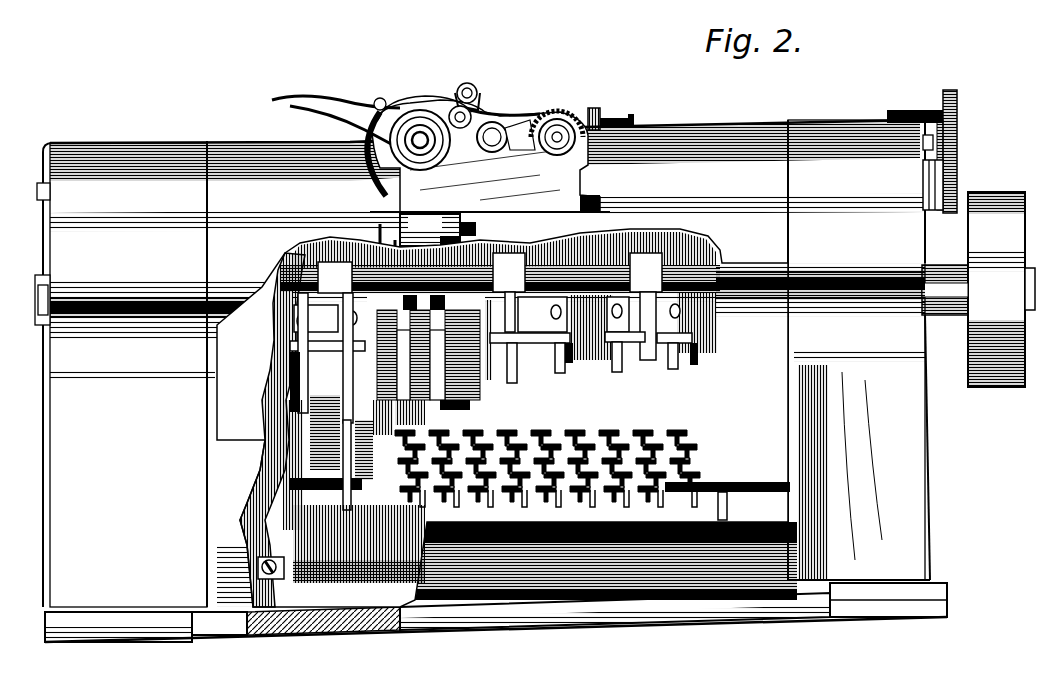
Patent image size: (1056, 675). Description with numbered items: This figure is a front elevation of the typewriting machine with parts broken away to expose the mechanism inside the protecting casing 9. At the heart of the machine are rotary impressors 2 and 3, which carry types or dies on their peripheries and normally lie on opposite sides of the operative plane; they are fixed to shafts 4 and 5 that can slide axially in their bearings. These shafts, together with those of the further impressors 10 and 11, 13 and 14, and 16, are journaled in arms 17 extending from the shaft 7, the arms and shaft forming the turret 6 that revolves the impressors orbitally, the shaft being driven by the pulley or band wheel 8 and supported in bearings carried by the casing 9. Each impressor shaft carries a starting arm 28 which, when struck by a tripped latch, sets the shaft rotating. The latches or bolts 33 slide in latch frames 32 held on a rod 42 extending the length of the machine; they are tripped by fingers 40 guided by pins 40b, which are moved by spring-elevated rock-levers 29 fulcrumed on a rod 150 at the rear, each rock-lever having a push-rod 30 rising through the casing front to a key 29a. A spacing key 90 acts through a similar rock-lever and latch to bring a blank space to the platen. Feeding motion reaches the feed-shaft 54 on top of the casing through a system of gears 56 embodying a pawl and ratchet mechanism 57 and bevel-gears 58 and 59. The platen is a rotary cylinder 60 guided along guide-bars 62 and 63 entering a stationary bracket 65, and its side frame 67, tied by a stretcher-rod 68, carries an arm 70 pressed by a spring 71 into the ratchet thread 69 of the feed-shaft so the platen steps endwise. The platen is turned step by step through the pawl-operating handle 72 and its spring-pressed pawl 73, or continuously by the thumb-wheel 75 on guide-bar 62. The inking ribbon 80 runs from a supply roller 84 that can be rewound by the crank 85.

The impressor 2 is at (405, 304).
The impressor 3 is at (445, 303).
The shaft 4 is at (276, 303).
The shaft 5 is at (712, 298).
The turret 6 is at (468, 378).
The shaft 7 is at (1031, 276).
The pulley or band wheel 8 is at (978, 314).
The protecting casing 9 is at (58, 412).
The impressor 10 is at (415, 252).
The impressor 11 is at (443, 252).
The impressor 13 is at (428, 388).
The impressor 14 is at (452, 388).
The impressor 16 is at (368, 460).
The arms 17 is at (480, 252).
The starting arm 28 is at (290, 408).
The rock-lever 29 is at (336, 584).
The key 29a is at (586, 440).
The push-rod 30 is at (486, 509).
The latch frame 32 is at (290, 368).
The latch or bolt 33 is at (306, 324).
The finger 40 is at (300, 432).
The pins 40b is at (672, 344).
The rod 42 is at (568, 275).
The feed-shaft 54 is at (720, 124).
The system of gears 56 is at (957, 115).
The pawl and ratchet mechanism 57 is at (934, 212).
The bevel-gear 58 is at (596, 108).
The bevel-gear 59 is at (553, 110).
The rotary cylinder platen 60 is at (428, 100).
The guide-bar 62 is at (488, 150).
The guide-bar 63 is at (520, 150).
The stationary bracket 65 is at (583, 195).
The side frame 67 is at (468, 84).
The stretcher-rod 68 is at (478, 94).
The ratchet thread or feed-screw 69 is at (553, 150).
The arm 70 is at (515, 113).
The spring 71 is at (472, 113).
The pawl-operating handle 72 is at (300, 99).
The spring-pressed pawl 73 is at (387, 100).
The thumb-wheel 75 is at (425, 168).
The inking ribbon 80 is at (430, 230).
The supply roller 84 is at (470, 236).
The crank 85 is at (378, 235).
The spacing key 90 is at (760, 478).
The rod 150 is at (272, 578).